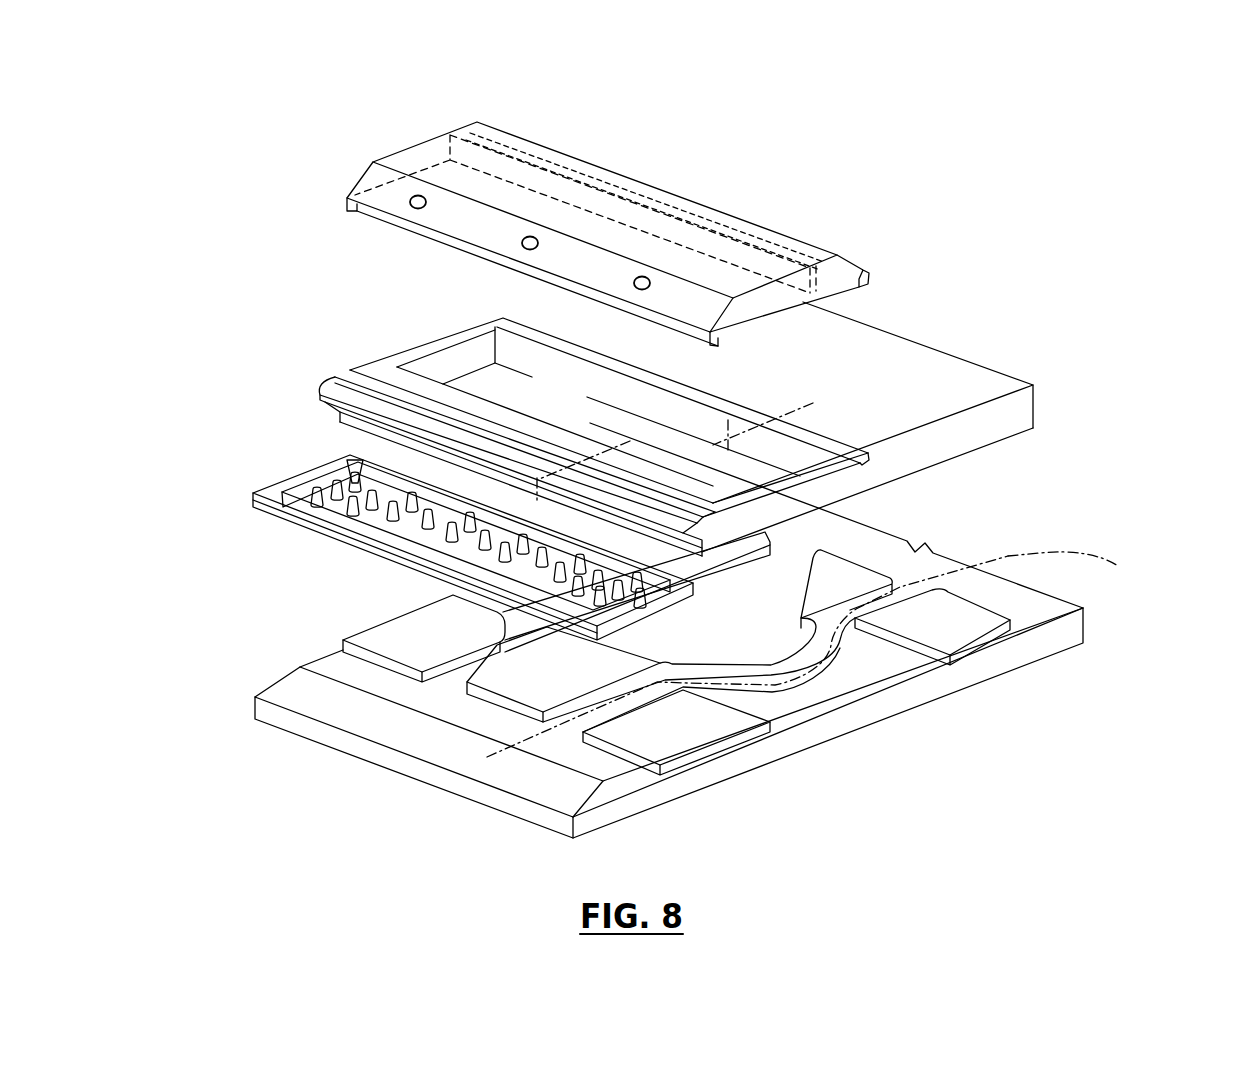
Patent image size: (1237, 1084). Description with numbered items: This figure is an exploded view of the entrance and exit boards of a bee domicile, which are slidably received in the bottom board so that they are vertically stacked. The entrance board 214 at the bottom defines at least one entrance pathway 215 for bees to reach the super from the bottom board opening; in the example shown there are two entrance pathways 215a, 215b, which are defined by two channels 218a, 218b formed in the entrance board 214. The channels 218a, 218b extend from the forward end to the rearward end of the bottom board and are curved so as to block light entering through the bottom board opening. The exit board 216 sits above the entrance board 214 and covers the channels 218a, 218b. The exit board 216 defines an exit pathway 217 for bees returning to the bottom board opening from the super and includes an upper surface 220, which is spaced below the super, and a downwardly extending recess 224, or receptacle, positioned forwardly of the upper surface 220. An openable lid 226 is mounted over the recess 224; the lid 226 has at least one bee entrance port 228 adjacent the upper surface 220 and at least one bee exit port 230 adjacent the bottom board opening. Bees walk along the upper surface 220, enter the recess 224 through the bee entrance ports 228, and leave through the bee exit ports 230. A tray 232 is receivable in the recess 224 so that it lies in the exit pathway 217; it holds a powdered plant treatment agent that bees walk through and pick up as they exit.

The entrance board 214 is at (963, 627).
The entrance pathway 215 is at (1088, 570).
The entrance pathway 215a is at (520, 633).
The entrance pathway 215b is at (795, 660).
The exit board 216 is at (976, 388).
The exit pathway 217 is at (813, 395).
The channel 218a is at (379, 623).
The channel 218b is at (845, 648).
The upper surface 220 is at (873, 350).
The recess 224 is at (578, 410).
The lid 226 is at (433, 157).
The bee entrance port 228 is at (768, 228).
The bee exit port 230 is at (410, 206).
The tray 232 is at (310, 474).